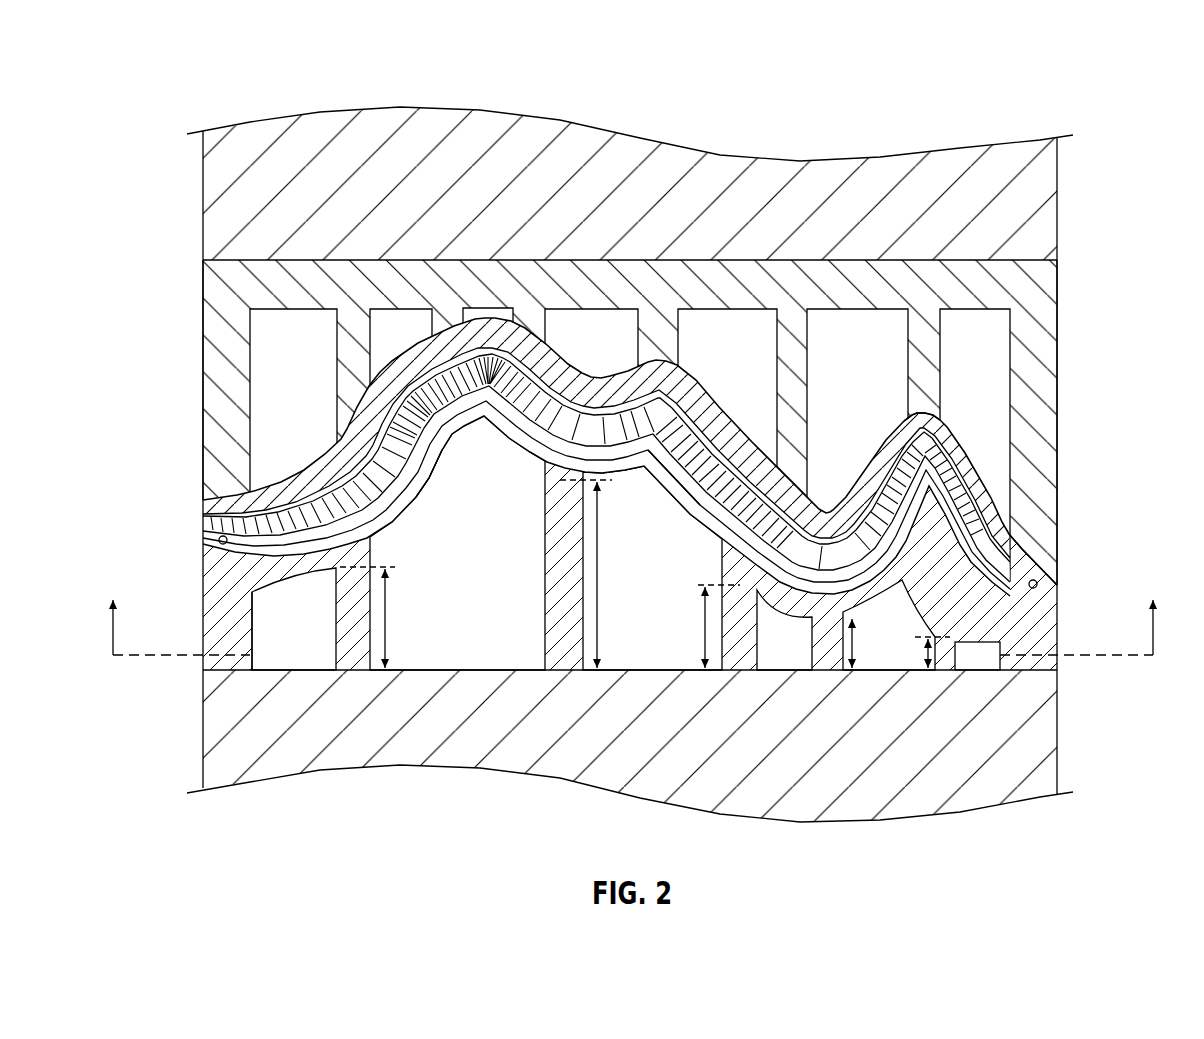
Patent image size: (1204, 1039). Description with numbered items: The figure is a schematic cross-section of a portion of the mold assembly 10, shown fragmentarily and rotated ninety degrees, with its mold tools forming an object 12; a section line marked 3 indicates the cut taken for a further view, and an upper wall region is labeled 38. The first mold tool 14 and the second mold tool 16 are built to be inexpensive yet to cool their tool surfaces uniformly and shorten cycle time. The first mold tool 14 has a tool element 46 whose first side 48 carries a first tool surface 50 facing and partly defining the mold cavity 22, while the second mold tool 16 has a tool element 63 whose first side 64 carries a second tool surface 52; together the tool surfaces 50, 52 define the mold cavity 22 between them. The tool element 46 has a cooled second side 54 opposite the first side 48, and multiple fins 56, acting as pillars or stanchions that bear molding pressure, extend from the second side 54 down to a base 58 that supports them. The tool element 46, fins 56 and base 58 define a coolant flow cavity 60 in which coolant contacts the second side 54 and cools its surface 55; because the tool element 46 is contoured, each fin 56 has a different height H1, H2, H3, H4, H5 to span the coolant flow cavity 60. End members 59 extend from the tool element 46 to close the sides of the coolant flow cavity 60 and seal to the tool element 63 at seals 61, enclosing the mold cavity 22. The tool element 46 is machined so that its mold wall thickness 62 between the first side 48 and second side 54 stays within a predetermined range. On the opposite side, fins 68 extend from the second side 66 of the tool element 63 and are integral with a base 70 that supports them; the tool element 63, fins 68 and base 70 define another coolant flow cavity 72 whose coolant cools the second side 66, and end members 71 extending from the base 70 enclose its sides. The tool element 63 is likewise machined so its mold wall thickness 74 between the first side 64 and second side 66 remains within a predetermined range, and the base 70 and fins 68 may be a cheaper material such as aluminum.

The mold assembly 10 is at (1135, 105).
The object 12 is at (1015, 512).
The first mold tool 14 is at (1108, 582).
The second mold tool 16 is at (1115, 190).
The mold cavity 22 is at (1023, 533).
The outer wall 38 is at (930, 175).
The tool element 46 is at (205, 510).
The first side 48 is at (225, 493).
The first tool surface 50 is at (367, 477).
The second tool surface 52 is at (377, 447).
The second side 54 is at (390, 528).
The surface 55 is at (438, 485).
The fins 56 is at (357, 663).
The base 58 is at (1052, 740).
The end members 59 is at (213, 587).
The coolant flow cavity 60 is at (275, 644).
The seals 61 is at (219, 538).
The mold wall thickness 62 is at (512, 458).
The tool element 63 is at (937, 423).
The first side 64 is at (446, 380).
The second side 66 is at (475, 313).
The fins 68 is at (352, 320).
The base 70 is at (1000, 275).
The end members 71 is at (218, 400).
The coolant flow cavity 72 is at (277, 344).
The mold wall thickness 74 is at (750, 410).
The height H1 is at (397, 611).
The height H2 is at (605, 573).
The height H3 is at (698, 612).
The height H4 is at (858, 650).
The height H5 is at (935, 650).
The section line 3- 3 is at (632, 610).